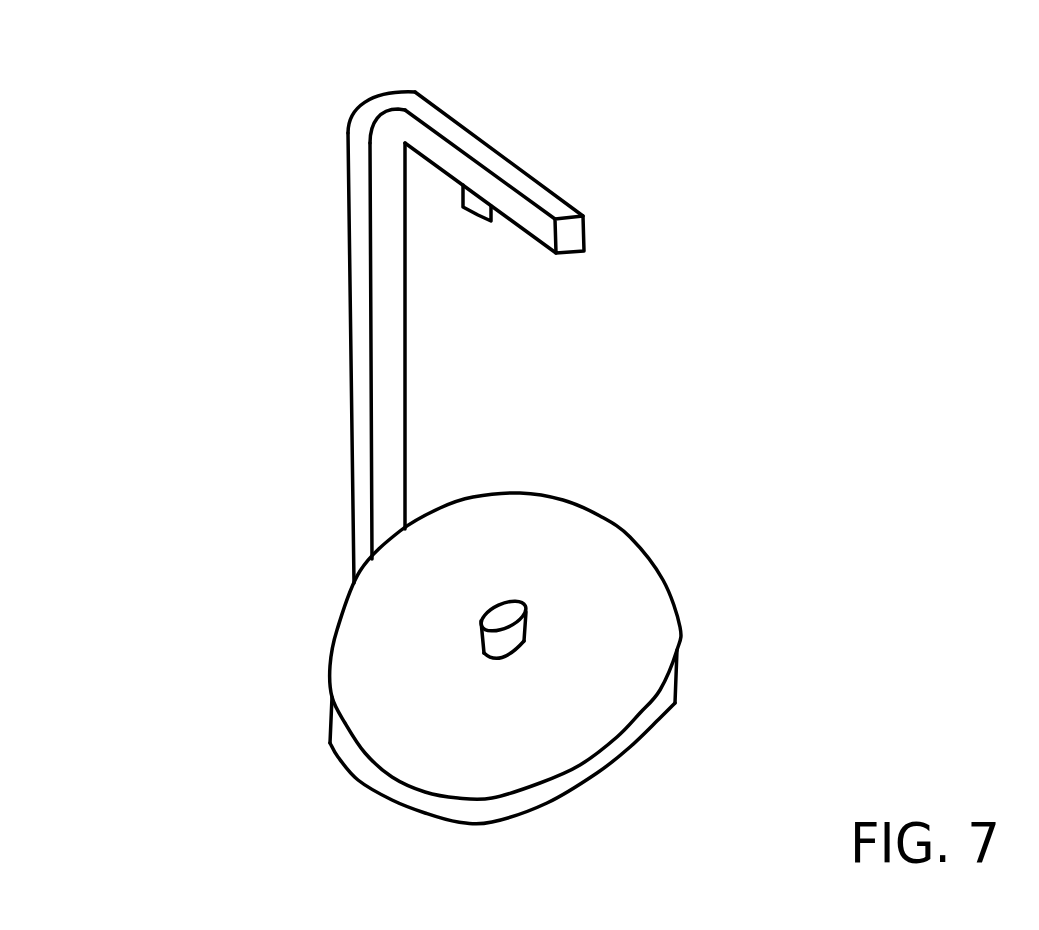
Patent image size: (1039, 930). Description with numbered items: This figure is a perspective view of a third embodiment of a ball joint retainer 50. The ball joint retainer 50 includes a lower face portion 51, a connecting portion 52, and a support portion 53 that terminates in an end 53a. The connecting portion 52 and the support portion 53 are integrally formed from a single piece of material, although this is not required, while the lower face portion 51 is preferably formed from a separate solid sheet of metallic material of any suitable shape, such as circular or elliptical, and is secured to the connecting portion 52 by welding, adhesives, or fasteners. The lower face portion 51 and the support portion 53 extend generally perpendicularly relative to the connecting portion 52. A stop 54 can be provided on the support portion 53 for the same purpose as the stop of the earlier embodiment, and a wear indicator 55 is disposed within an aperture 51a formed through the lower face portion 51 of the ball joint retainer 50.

The ball joint retainer 50 is at (570, 415).
The lower face portion 51 is at (377, 698).
The aperture 51a is at (524, 640).
The connecting portion 52 is at (390, 368).
The support portion 53 is at (567, 171).
The end 53a is at (543, 204).
The stop 54 is at (477, 220).
The wear indicator 55 is at (507, 623).